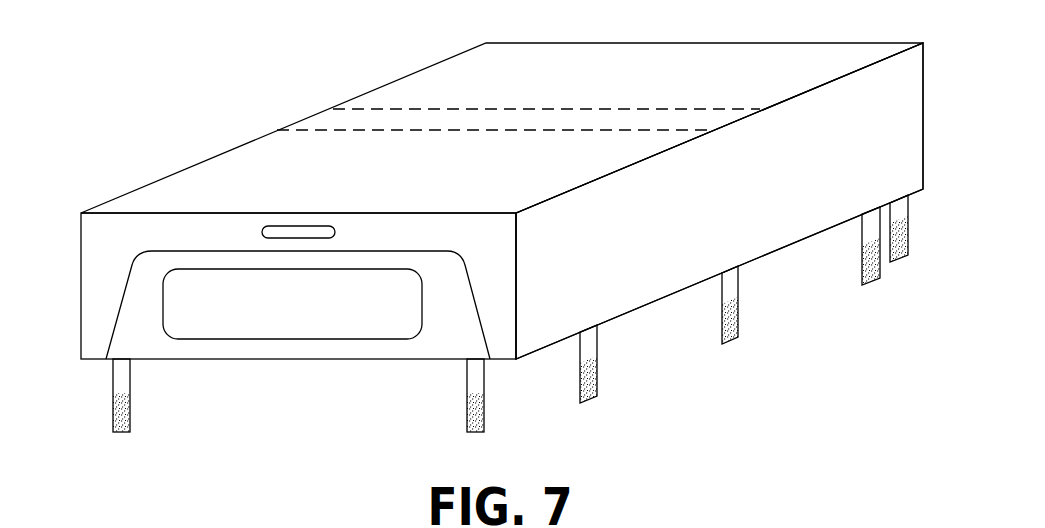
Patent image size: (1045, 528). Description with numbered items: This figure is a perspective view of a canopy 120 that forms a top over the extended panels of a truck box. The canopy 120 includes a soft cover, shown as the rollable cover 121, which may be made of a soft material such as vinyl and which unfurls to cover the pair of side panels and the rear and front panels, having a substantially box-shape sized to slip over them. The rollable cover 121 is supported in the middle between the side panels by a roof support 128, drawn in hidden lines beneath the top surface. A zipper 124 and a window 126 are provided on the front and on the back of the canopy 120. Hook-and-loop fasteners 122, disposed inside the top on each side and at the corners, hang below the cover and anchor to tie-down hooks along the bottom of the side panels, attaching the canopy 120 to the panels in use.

The canopy 120 is at (502, 234).
The rollable cover 121 is at (618, 258).
The hook-and-loop fasteners 122 is at (730, 345).
The zipper 124 is at (474, 307).
The window 126 is at (299, 317).
The roof support 128 is at (387, 120).